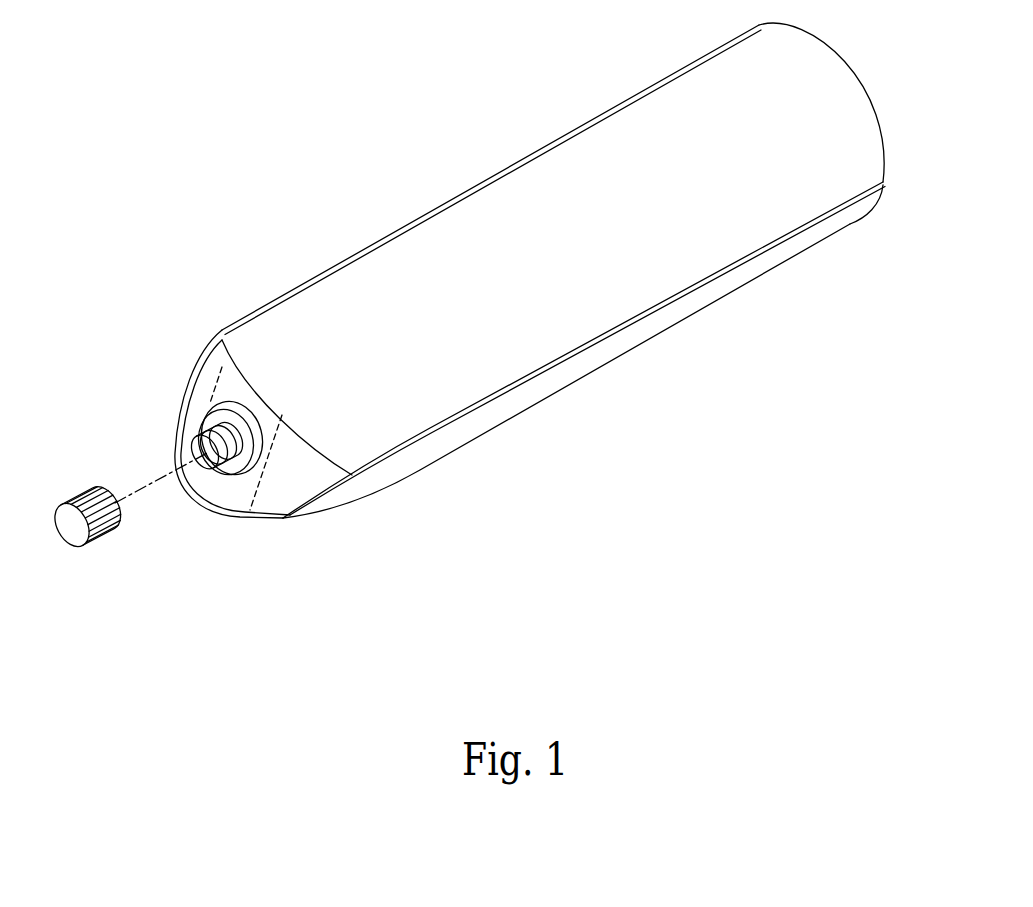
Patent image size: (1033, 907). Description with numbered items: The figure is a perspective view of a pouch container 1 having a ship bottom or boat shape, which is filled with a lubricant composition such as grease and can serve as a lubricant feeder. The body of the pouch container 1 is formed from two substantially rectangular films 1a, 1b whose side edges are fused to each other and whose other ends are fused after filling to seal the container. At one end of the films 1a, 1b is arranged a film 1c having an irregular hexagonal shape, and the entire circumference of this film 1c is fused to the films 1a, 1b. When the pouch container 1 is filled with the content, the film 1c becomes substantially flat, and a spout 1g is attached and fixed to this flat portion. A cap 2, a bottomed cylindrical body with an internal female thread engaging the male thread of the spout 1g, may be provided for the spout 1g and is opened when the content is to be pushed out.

The pouch container 1 is at (485, 359).
The film 1a is at (437, 240).
The film 1b is at (632, 340).
The film 1c is at (213, 380).
The spout 1g is at (183, 423).
The cap 2 is at (75, 500).